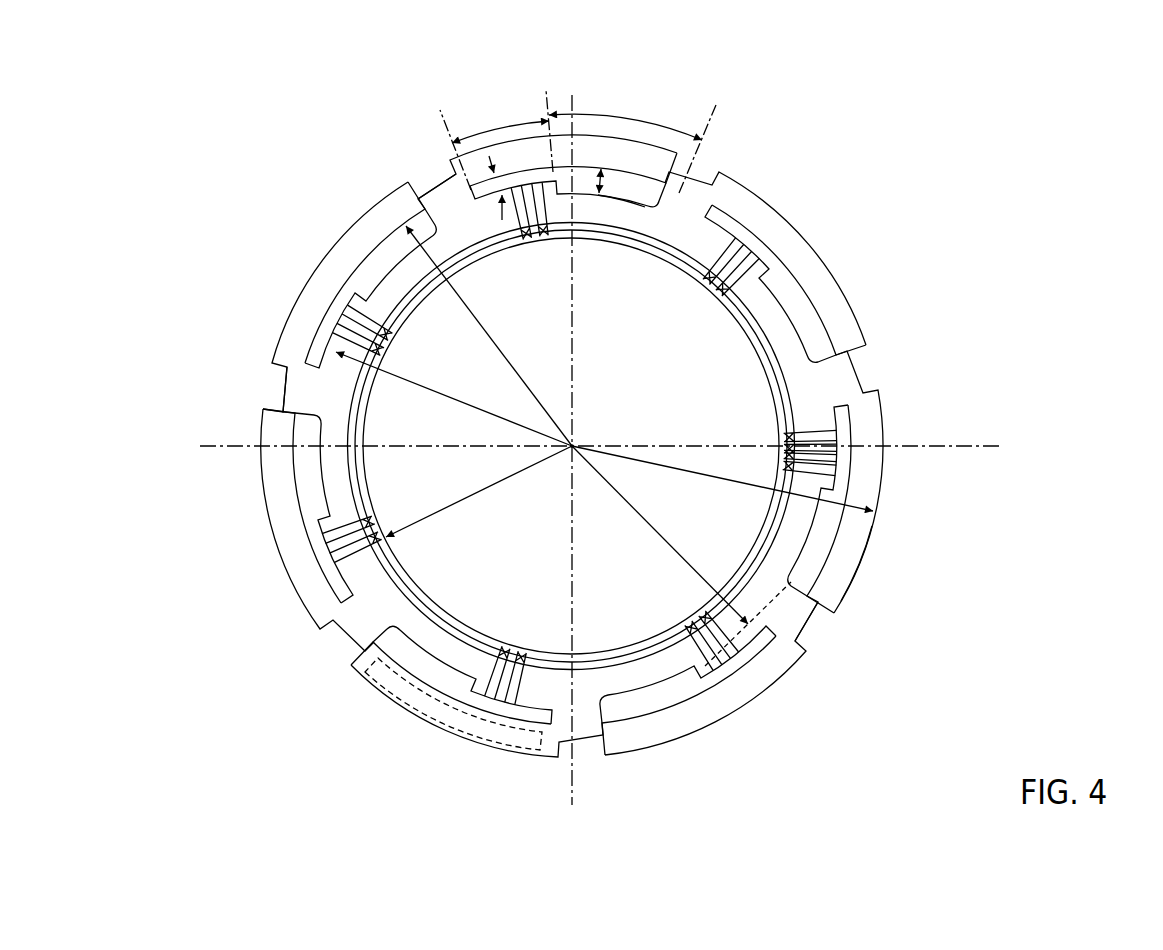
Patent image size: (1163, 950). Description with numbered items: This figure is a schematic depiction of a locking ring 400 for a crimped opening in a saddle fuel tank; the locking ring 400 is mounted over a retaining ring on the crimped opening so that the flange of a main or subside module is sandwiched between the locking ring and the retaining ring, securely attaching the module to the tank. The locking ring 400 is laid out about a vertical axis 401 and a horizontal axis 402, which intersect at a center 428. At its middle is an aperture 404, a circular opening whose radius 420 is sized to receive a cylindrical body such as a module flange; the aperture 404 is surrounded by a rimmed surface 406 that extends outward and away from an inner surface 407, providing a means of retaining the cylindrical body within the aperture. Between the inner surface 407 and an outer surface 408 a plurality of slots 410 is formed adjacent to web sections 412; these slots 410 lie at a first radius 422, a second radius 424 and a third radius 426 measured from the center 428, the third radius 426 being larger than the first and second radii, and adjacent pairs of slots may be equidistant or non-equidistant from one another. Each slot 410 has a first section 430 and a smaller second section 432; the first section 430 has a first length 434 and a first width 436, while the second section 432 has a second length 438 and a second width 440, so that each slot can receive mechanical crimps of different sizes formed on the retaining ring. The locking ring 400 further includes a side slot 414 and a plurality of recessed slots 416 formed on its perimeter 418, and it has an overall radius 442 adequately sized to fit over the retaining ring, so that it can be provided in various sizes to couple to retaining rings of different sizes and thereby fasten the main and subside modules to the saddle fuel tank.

The locking ring 400 is at (122, 100).
The vertical axis 401 is at (573, 750).
The horizontal axis 402 is at (940, 445).
The aperture 404 is at (386, 432).
The rimmed surface 406 is at (793, 406).
The inner surface 407 is at (773, 323).
The outer surface 408 is at (762, 232).
The slots 410 is at (616, 198).
The web sections 412 is at (721, 286).
The side slot 414 is at (410, 693).
The recessed slots 416 is at (431, 184).
The perimeter 418 is at (863, 563).
The radius of the aperture 420 is at (486, 488).
The first radius 422 is at (655, 532).
The second radius 424 is at (456, 401).
The third radius 426 is at (465, 303).
The center 428 is at (576, 441).
The first section 430 is at (645, 196).
The second section 432 is at (484, 191).
The first length 434 is at (628, 120).
The first width 436 is at (604, 182).
The second length 438 is at (505, 135).
The second width 440 is at (494, 173).
The radius of the locking ring 442 is at (701, 474).